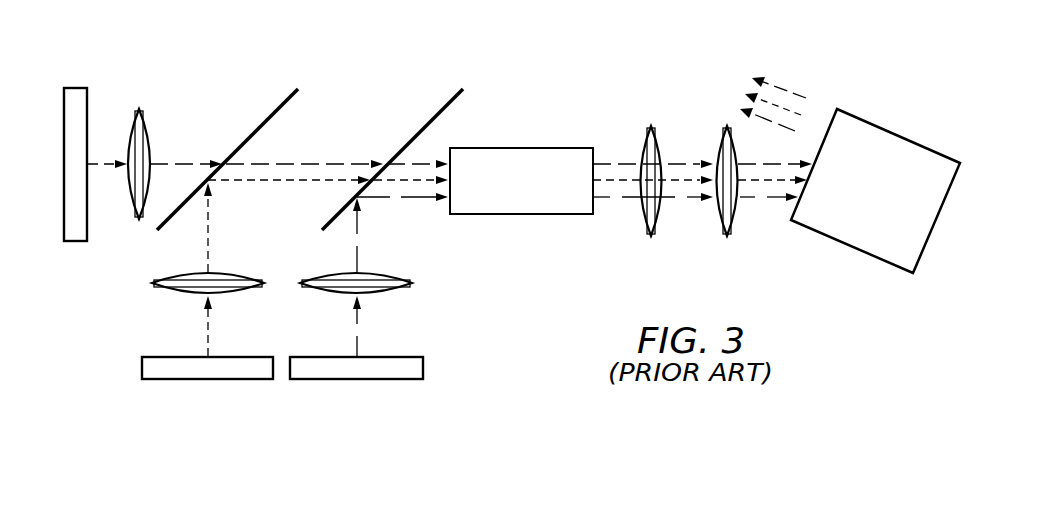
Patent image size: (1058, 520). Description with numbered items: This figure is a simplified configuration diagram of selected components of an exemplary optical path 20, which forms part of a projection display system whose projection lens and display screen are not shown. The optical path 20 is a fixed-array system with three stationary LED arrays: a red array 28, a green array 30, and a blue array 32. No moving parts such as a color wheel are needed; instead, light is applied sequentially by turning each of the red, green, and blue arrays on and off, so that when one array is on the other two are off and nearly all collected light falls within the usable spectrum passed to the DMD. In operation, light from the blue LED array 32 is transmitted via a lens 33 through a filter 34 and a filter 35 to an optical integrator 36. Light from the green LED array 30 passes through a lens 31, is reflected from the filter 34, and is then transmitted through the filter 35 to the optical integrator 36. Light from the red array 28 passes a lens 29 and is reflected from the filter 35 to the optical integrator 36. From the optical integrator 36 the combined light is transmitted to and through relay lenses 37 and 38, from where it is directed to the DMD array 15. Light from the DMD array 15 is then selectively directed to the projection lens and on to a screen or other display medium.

The optical path 20 is at (186, 45).
The blue LED array 32 is at (74, 86).
The lens 33 is at (138, 106).
The filter 34 is at (266, 119).
The filter 35 is at (431, 119).
The optical integrator 36 is at (532, 146).
The relay lens 37 is at (651, 237).
The relay lens 38 is at (727, 237).
The DMD array 15 is at (898, 134).
The lens 31 is at (151, 282).
The lens 29 is at (413, 282).
The green LED array 30 is at (141, 366).
The red array 28 is at (424, 366).